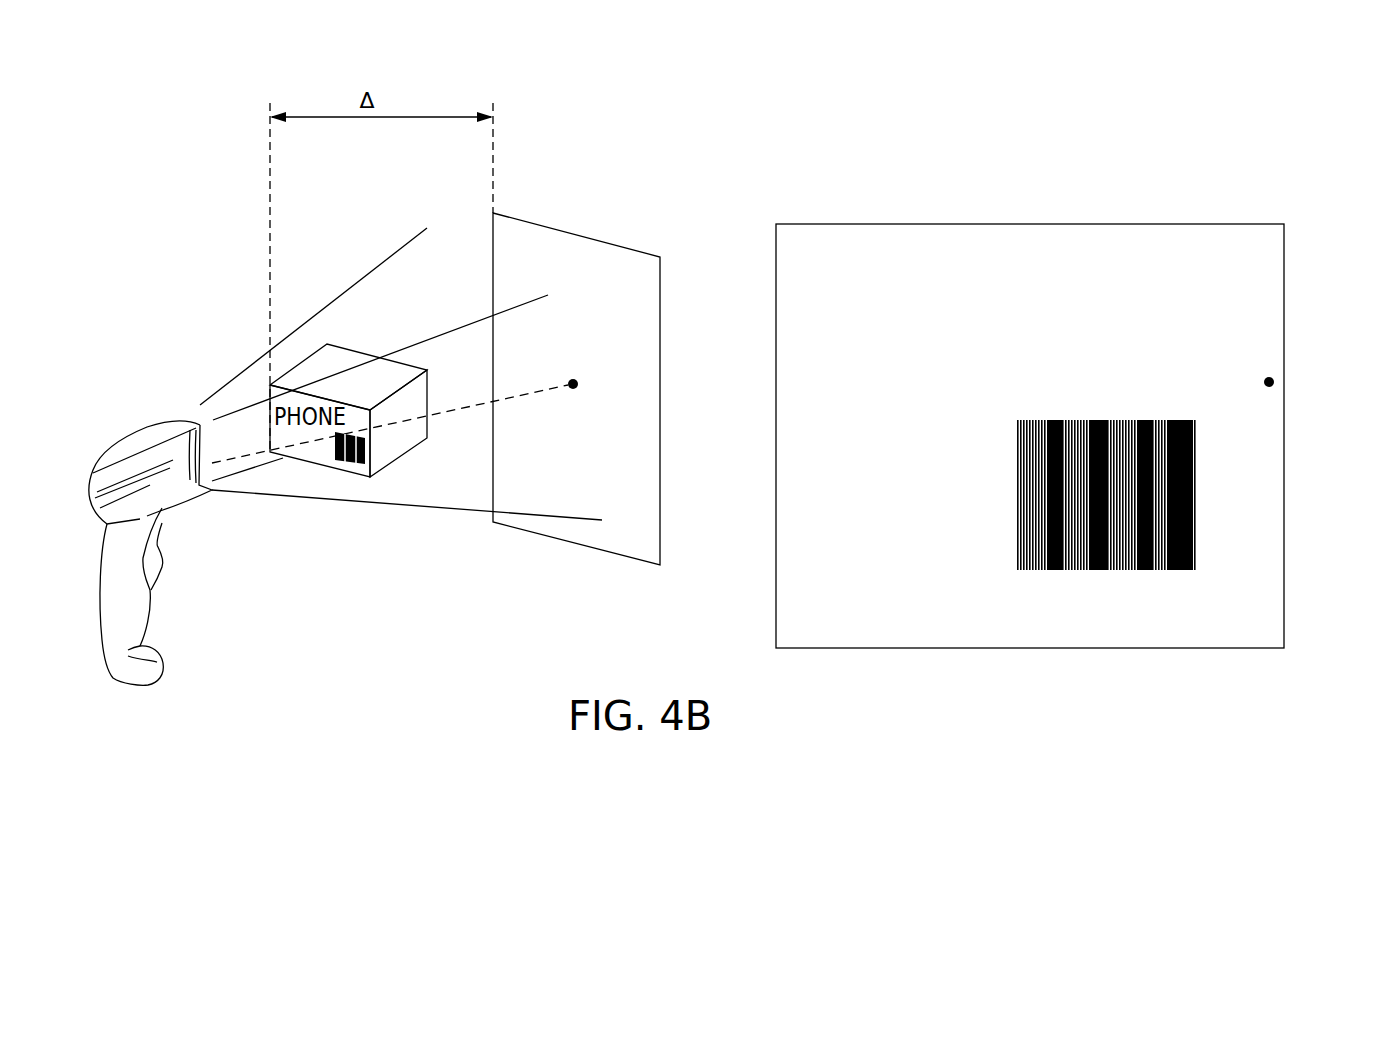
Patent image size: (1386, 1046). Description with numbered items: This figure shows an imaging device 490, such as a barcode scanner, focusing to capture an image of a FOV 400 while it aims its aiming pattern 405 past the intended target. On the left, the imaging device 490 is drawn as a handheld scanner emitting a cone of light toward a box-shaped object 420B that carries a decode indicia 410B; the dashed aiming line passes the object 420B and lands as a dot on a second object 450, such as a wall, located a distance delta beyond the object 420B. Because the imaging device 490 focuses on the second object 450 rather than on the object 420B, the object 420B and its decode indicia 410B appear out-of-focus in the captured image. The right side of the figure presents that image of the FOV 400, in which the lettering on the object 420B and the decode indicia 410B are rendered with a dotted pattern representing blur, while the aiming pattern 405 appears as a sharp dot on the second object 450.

The imaging device 490 is at (110, 453).
The second object 450 is at (580, 253).
The FOV 400 is at (885, 225).
The aiming pattern 405 is at (1275, 382).
The object 420B is at (845, 445).
The decode indicia 410B is at (1005, 465).